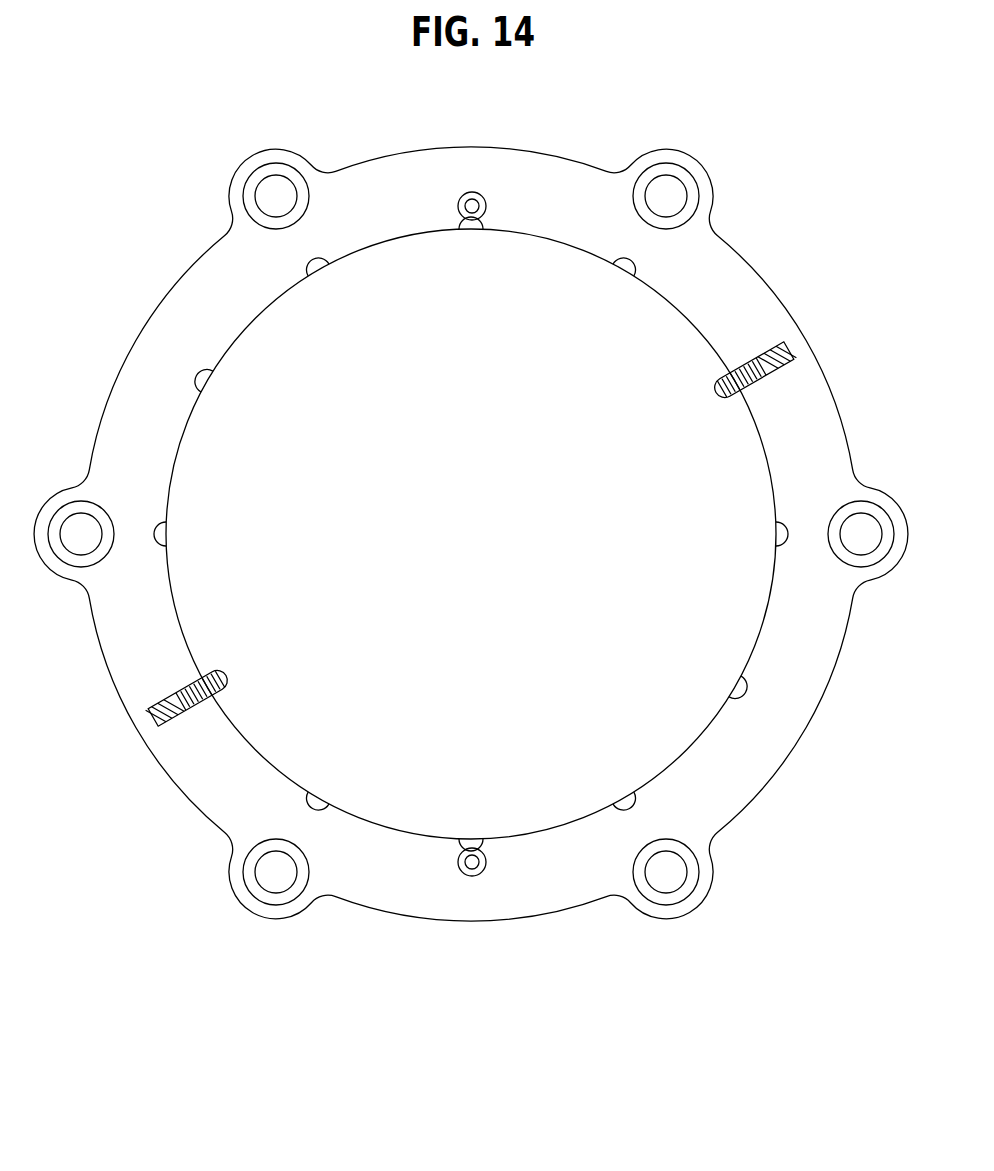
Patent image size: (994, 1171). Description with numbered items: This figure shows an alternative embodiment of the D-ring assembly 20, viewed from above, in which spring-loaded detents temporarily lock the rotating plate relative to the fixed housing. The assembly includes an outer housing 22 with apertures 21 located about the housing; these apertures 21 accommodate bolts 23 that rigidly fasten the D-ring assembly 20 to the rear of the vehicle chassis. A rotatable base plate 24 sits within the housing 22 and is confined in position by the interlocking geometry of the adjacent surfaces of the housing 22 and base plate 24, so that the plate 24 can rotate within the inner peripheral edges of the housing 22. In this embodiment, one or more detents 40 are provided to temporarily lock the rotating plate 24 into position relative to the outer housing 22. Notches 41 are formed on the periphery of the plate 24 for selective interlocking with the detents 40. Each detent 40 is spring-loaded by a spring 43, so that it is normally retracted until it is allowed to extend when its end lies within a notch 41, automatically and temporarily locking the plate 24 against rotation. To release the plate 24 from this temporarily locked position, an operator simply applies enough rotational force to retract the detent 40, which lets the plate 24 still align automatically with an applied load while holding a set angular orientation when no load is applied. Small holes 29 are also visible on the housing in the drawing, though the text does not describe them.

The D-ring assembly 20 is at (762, 117).
The apertures 21 is at (268, 898).
The outer housing 22 is at (471, 534).
The bolts 23 is at (280, 873).
The rotatable base plate 24 is at (471, 534).
The locating hole 29 is at (473, 192).
The detents 40 is at (728, 393).
The notches 41 is at (327, 281).
The spring 43 is at (792, 374).